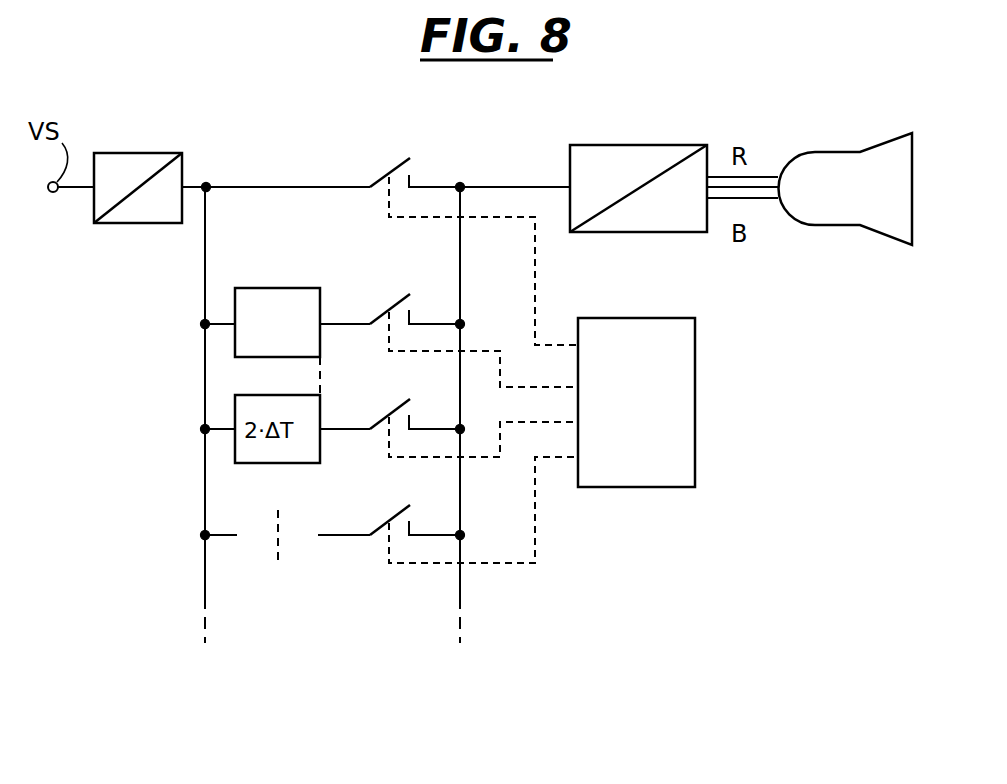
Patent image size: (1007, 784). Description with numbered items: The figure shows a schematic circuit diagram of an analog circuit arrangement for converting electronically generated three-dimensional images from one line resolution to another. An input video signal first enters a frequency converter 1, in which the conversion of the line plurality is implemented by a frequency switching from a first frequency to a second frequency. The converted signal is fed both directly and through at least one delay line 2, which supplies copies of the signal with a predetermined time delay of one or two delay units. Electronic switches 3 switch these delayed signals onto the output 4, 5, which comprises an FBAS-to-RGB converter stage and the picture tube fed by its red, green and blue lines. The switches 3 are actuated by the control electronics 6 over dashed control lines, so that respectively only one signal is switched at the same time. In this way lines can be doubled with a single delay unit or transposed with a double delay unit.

The frequency converter 1 is at (130, 153).
The delay line 2 is at (272, 290).
The electronic switches 3 is at (398, 156).
The output 4 is at (658, 145).
The output 5 is at (838, 152).
The control electronics 6 is at (695, 388).